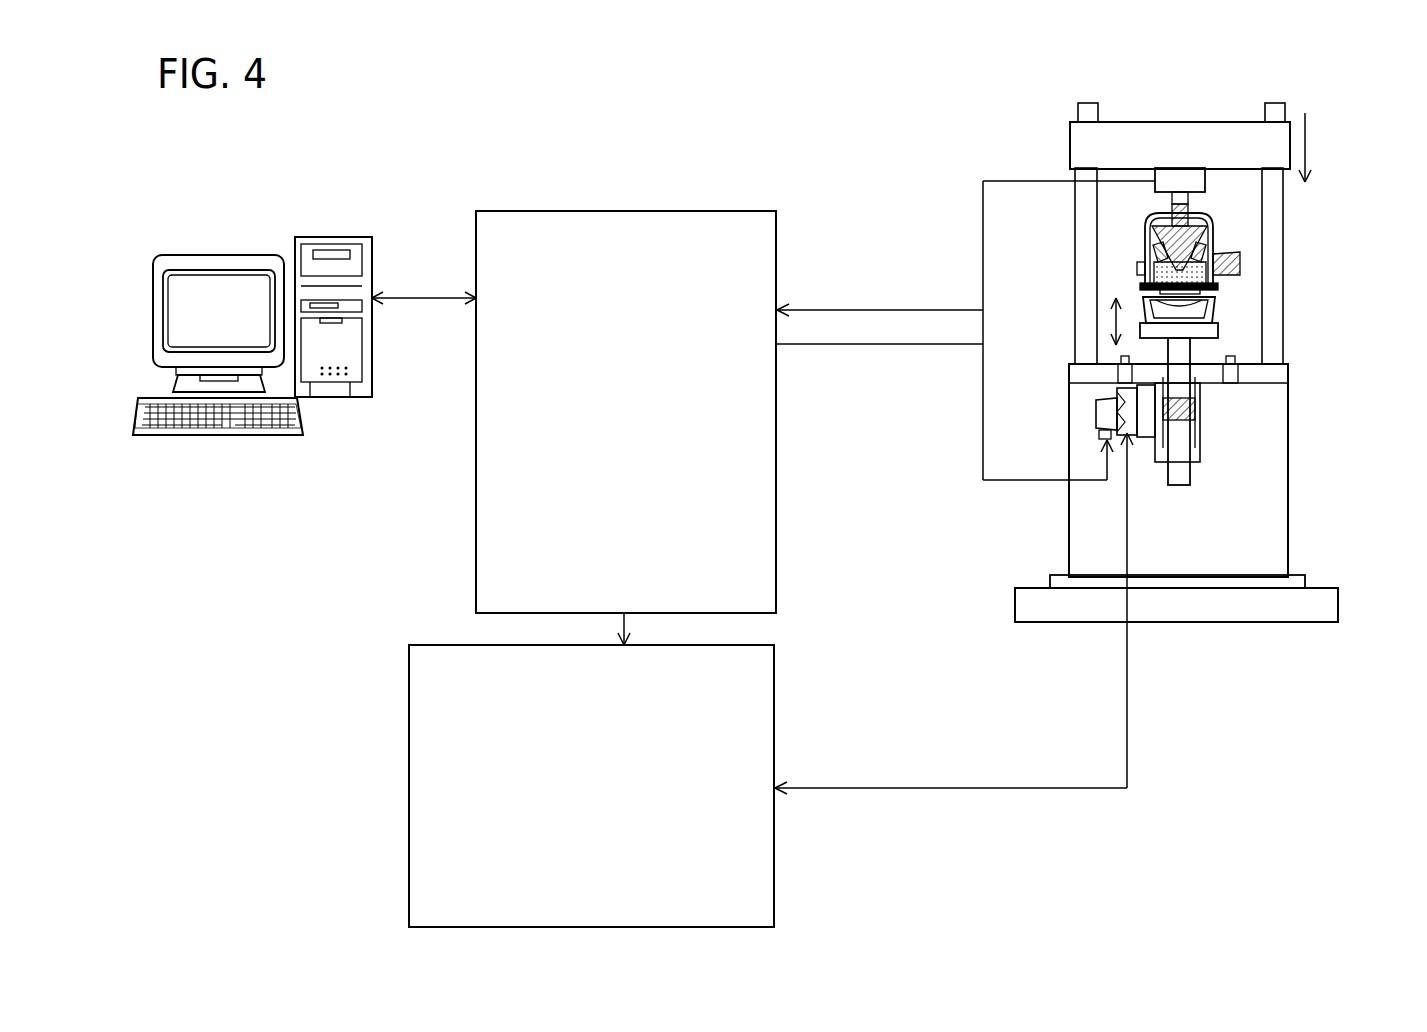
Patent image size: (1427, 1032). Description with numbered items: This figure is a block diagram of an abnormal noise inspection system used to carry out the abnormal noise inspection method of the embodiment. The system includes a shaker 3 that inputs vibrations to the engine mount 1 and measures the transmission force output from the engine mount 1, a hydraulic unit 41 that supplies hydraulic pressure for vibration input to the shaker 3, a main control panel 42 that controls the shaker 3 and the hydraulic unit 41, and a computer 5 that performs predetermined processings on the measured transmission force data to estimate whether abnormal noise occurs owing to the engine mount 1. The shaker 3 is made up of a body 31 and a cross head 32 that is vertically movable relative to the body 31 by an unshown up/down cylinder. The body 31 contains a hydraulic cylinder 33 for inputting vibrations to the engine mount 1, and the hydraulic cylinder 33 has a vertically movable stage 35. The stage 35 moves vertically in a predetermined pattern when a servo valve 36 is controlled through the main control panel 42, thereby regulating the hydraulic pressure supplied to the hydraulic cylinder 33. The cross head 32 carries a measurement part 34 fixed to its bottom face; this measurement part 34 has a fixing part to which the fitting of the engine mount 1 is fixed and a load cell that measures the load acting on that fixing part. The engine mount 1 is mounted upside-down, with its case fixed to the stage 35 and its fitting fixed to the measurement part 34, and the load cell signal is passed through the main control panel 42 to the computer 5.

The engine mount 1 is at (1212, 232).
The shaker 3 is at (1359, 282).
The computer 5 is at (238, 211).
The body 31 is at (1288, 497).
The cross head 32 is at (1070, 141).
The hydraulic cylinder 33 is at (1200, 425).
The measurement part 34 is at (1205, 181).
The stage 35 is at (1218, 332).
The servo valve 36 is at (1096, 406).
The hydraulic unit 41 is at (774, 703).
The main control panel 42 is at (777, 483).